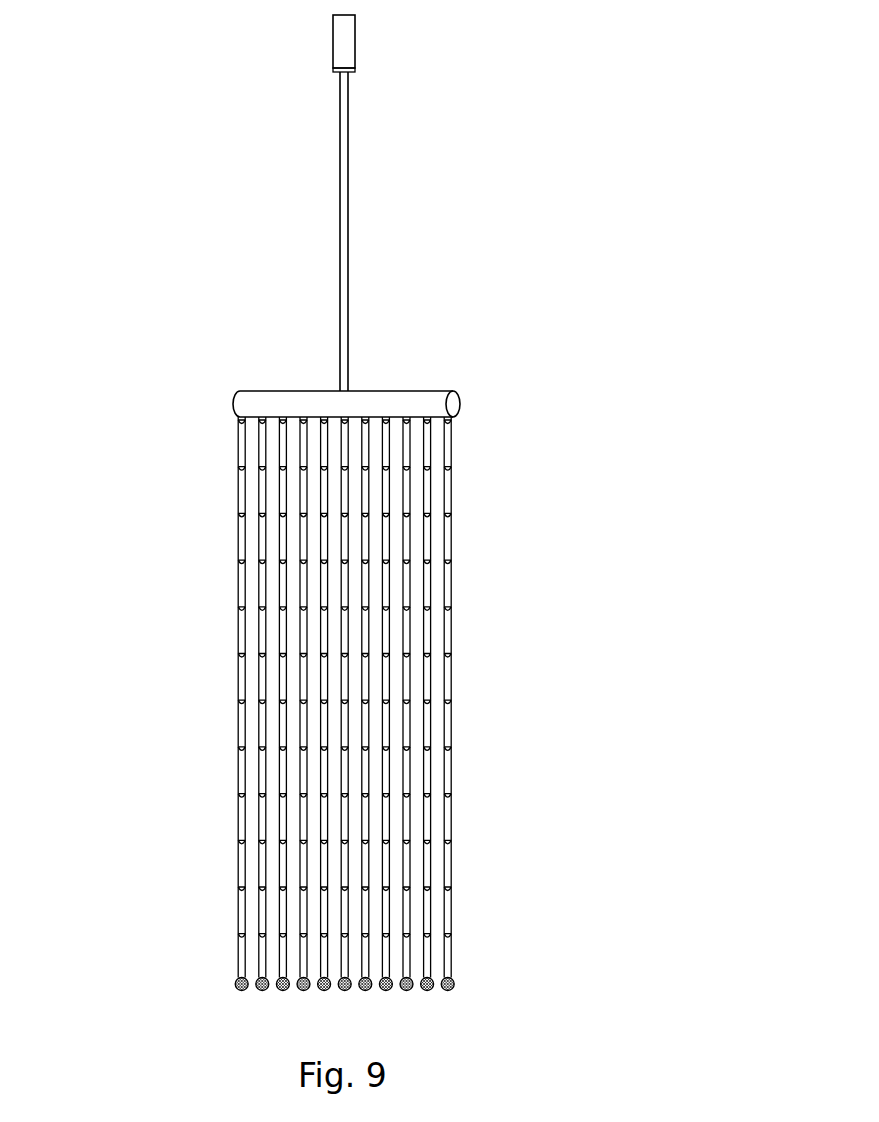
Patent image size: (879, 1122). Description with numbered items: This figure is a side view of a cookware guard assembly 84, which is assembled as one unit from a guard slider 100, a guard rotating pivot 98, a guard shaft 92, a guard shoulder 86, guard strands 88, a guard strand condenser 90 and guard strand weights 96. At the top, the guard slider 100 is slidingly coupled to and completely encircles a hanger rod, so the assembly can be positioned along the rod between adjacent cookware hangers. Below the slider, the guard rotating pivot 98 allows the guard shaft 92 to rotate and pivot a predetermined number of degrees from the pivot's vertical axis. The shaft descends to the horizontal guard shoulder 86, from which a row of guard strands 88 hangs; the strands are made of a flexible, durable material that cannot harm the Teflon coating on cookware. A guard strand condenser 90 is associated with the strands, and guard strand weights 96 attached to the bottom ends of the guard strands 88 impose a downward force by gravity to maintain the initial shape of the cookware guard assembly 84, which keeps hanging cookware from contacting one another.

The cookware guard assembly 84 is at (488, 467).
The guard shoulder 86 is at (270, 403).
The guard strand 88 is at (301, 743).
The guard strand condenser 90 is at (437, 958).
The guard shaft 92 is at (348, 230).
The guard strand weight 96 is at (236, 984).
The guard rotating pivot 98 is at (333, 72).
The guard slider 100 is at (342, 32).